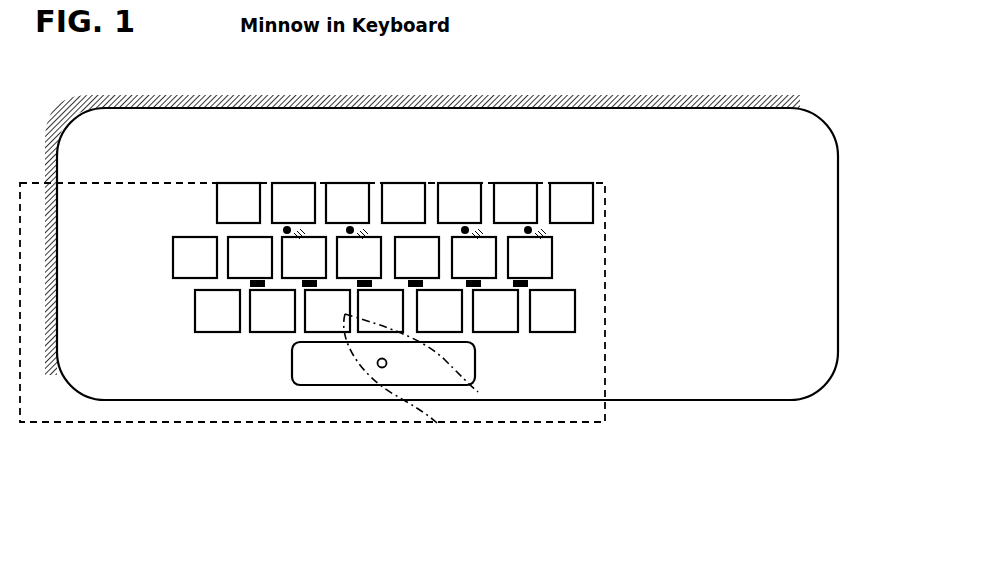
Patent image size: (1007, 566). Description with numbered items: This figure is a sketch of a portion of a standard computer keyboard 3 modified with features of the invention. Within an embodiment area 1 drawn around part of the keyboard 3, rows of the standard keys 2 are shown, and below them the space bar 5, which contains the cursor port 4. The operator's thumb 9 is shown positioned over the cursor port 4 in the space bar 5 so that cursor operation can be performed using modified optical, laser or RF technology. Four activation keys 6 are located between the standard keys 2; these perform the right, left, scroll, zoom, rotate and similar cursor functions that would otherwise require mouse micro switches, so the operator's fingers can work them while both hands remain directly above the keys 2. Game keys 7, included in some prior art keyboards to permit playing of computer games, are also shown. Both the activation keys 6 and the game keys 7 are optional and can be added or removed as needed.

The Embodiment Area 1 is at (128, 425).
The keys 2 is at (565, 313).
The keyboard 3 is at (85, 312).
The cursor port 4 is at (383, 370).
The space bar 5 is at (313, 357).
The activation keys 6 is at (287, 220).
The game keys 7 is at (468, 284).
The thumb 9 is at (437, 362).